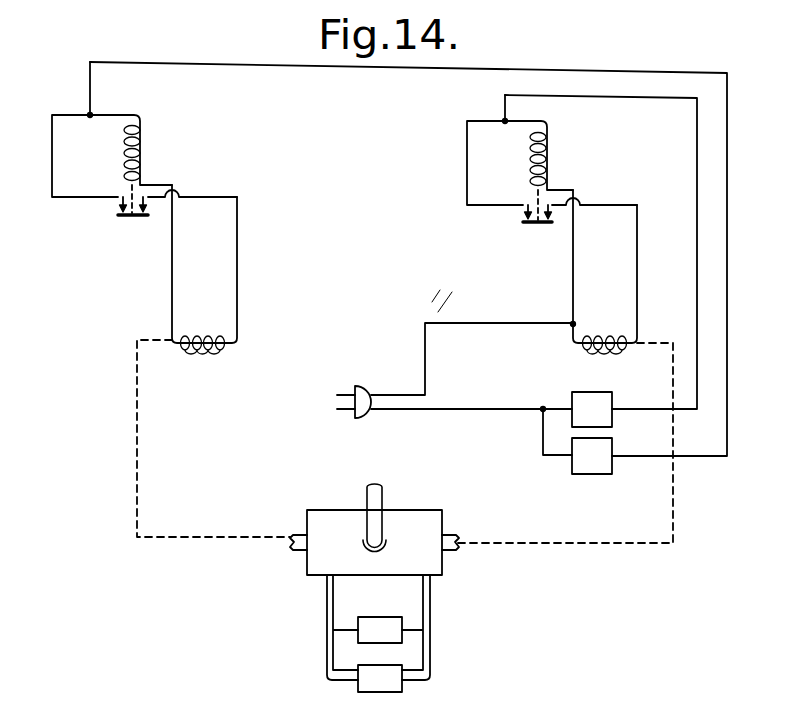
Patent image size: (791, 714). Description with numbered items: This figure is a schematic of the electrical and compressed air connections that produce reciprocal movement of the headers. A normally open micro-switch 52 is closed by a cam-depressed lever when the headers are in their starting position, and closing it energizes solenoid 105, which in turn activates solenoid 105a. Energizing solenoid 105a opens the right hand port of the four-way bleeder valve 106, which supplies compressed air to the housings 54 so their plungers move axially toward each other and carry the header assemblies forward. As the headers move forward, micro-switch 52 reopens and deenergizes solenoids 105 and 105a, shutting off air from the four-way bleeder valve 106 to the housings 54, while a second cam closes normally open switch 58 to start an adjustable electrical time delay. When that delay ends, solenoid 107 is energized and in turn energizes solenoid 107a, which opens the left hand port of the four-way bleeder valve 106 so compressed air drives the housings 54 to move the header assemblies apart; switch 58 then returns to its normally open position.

The solenoid 107 is at (141, 148).
The solenoid 107a is at (206, 335).
The solenoid 105 is at (547, 144).
The solenoid 105a is at (598, 338).
The micro-switch 52 is at (592, 409).
The switch 58 is at (592, 456).
The four-way bleeder valve 106 is at (317, 557).
The housings 54 is at (378, 633).